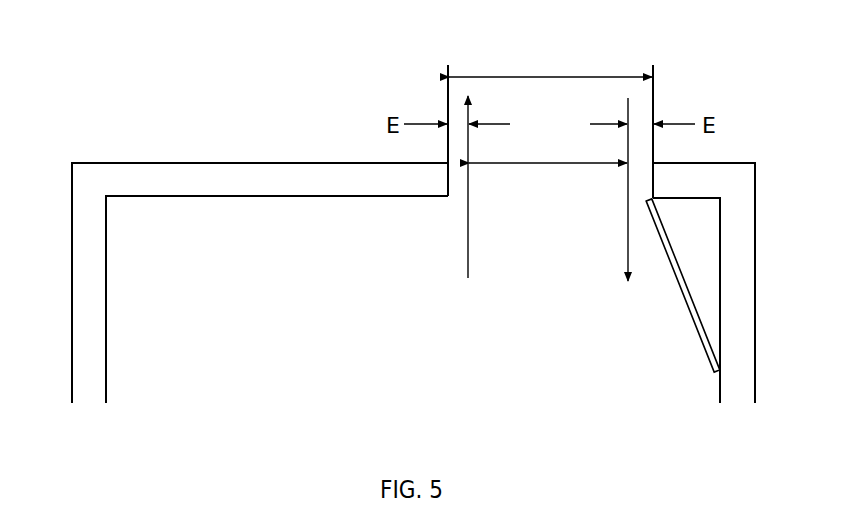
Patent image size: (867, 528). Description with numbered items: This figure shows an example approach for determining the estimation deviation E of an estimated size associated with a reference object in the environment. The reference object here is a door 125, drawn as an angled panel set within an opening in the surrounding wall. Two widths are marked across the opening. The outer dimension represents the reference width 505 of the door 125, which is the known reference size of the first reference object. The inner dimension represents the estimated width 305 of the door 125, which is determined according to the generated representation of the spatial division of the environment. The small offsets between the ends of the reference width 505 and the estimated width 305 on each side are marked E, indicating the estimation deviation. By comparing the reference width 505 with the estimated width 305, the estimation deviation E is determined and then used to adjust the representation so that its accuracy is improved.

The reference width 505 is at (575, 73).
The estimated width 305 is at (537, 164).
The door 125 is at (702, 343).